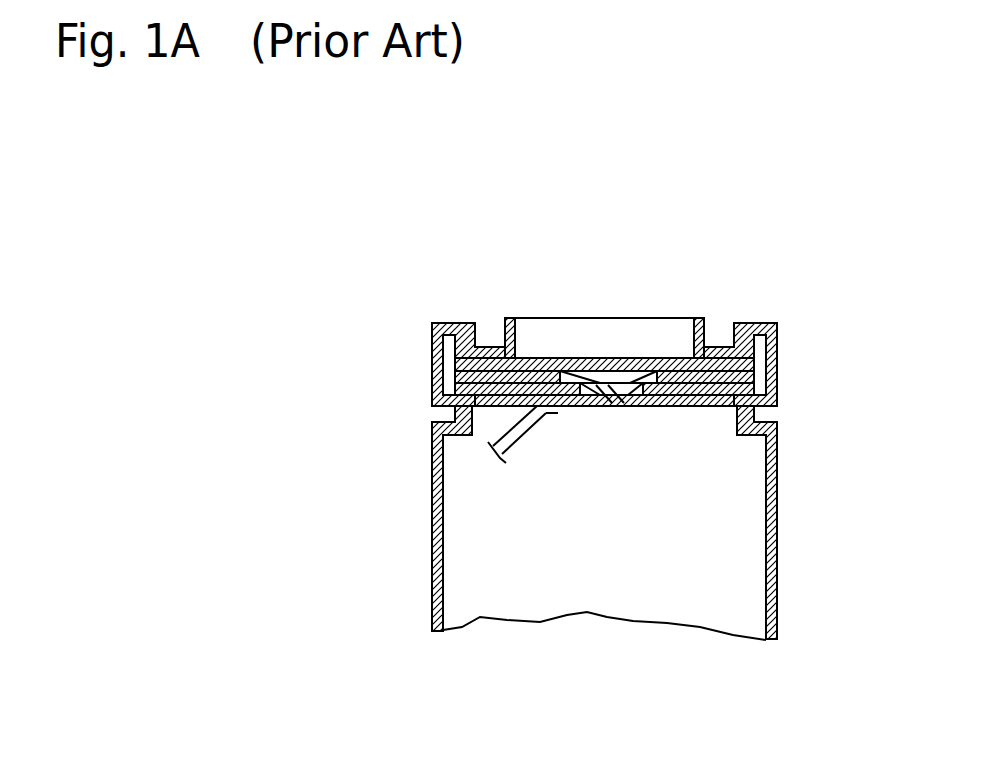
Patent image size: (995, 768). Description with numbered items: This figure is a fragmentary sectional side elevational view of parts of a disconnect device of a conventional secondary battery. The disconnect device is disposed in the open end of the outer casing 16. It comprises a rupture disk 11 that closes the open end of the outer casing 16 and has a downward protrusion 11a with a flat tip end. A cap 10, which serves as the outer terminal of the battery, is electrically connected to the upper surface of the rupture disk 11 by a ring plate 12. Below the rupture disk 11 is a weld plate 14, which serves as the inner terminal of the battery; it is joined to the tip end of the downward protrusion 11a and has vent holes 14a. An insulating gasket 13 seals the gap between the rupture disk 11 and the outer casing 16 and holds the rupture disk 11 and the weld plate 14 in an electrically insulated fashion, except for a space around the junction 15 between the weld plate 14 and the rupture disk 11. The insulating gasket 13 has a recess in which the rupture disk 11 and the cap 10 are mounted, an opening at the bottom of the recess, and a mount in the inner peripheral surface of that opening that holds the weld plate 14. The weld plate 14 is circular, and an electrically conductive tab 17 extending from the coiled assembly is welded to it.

The cap 10 is at (712, 332).
The rupture disk 11 is at (680, 408).
The downward protrusion 11a is at (592, 378).
The ring plate 12 is at (657, 371).
The insulating gasket 13 is at (772, 404).
The weld plate 14 is at (640, 408).
The vent holes 14a is at (577, 408).
The junction 15 is at (613, 408).
The outer casing 16 is at (432, 460).
The electrically conductive tab 17 is at (522, 440).